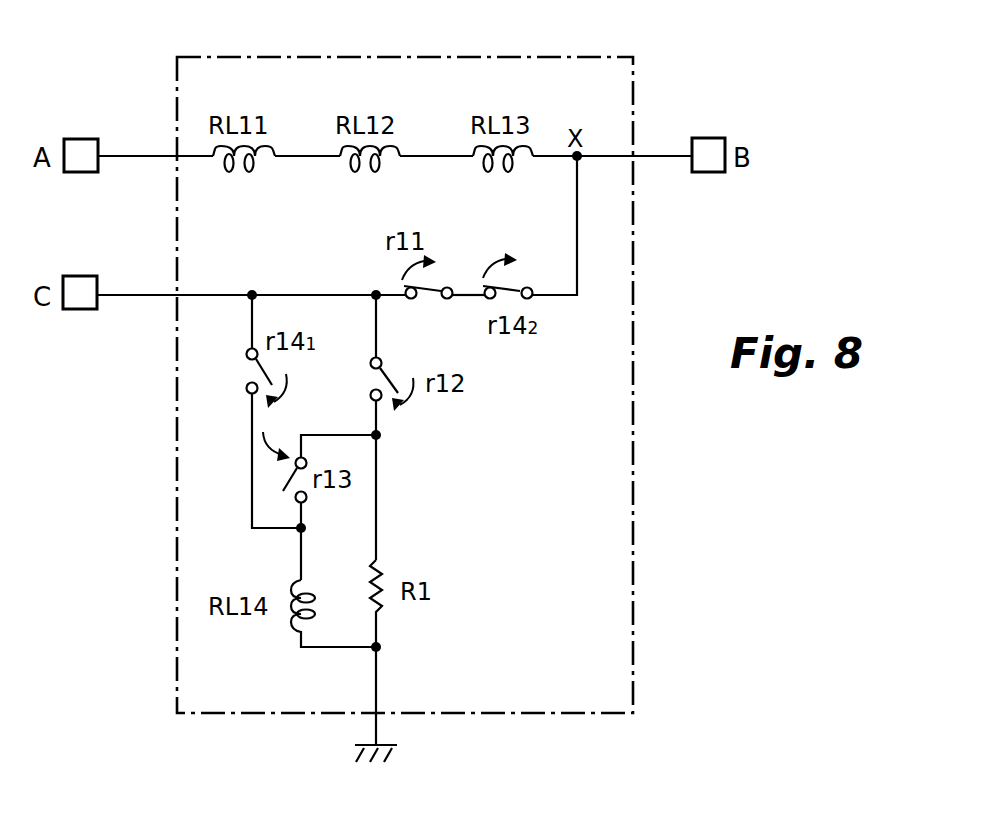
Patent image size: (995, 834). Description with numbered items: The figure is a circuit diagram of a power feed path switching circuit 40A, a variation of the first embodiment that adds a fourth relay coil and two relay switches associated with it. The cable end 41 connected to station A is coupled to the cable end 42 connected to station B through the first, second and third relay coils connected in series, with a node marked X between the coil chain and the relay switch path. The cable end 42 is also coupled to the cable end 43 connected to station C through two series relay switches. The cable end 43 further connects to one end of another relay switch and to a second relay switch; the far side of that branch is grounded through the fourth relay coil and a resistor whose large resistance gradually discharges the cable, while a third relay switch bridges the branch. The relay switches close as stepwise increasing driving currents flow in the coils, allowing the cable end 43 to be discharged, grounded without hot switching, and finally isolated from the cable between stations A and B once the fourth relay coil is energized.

The power feed path switching circuit 40A is at (517, 57).
The cable end 41 is at (78, 139).
The cable end 42 is at (697, 138).
The cable end 43 is at (80, 276).